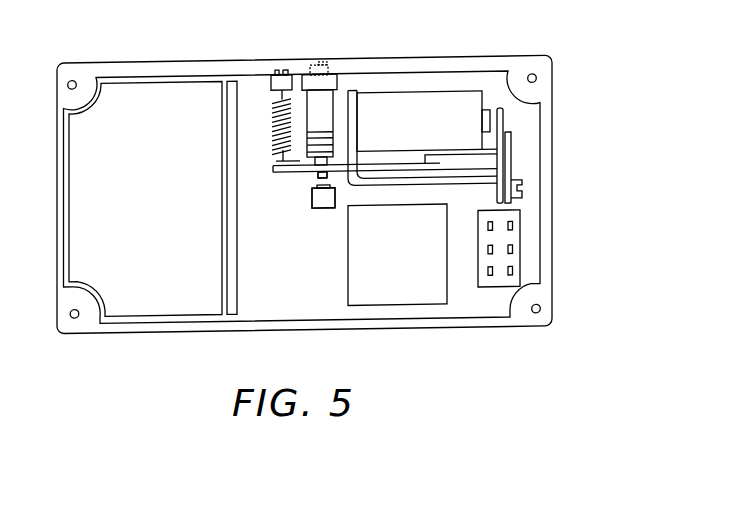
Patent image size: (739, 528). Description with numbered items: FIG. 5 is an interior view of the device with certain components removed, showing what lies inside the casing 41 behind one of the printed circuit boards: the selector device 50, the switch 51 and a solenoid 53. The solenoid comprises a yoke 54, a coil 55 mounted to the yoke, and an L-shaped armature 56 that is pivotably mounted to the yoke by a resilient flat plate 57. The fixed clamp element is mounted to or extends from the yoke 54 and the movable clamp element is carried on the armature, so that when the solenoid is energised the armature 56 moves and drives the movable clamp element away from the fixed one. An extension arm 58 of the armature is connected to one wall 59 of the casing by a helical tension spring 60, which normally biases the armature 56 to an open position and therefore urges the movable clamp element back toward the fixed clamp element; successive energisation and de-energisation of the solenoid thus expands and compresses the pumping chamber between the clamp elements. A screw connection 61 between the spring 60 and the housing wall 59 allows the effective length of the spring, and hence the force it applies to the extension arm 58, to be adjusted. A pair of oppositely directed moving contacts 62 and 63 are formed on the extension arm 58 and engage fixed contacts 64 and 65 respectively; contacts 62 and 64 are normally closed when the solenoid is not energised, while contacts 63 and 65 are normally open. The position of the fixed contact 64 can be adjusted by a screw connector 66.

The casing 41 is at (559, 76).
The selector device 50 is at (398, 312).
The switch 51 is at (525, 253).
The solenoid 53 is at (455, 87).
The yoke 54 is at (447, 189).
The coil 55 is at (407, 106).
The L-shaped armature 56 is at (503, 130).
The resilient flat plate 57 is at (510, 166).
The extension arm 58 is at (295, 179).
The wall of the casing 59 is at (200, 61).
The helical tension spring 60 is at (270, 136).
The screw connection 61 is at (288, 73).
The moving contact 62 is at (311, 168).
The moving contact 63 is at (332, 187).
The fixed contact 64 is at (311, 168).
The fixed contact 65 is at (332, 187).
The screw connector 66 is at (327, 68).